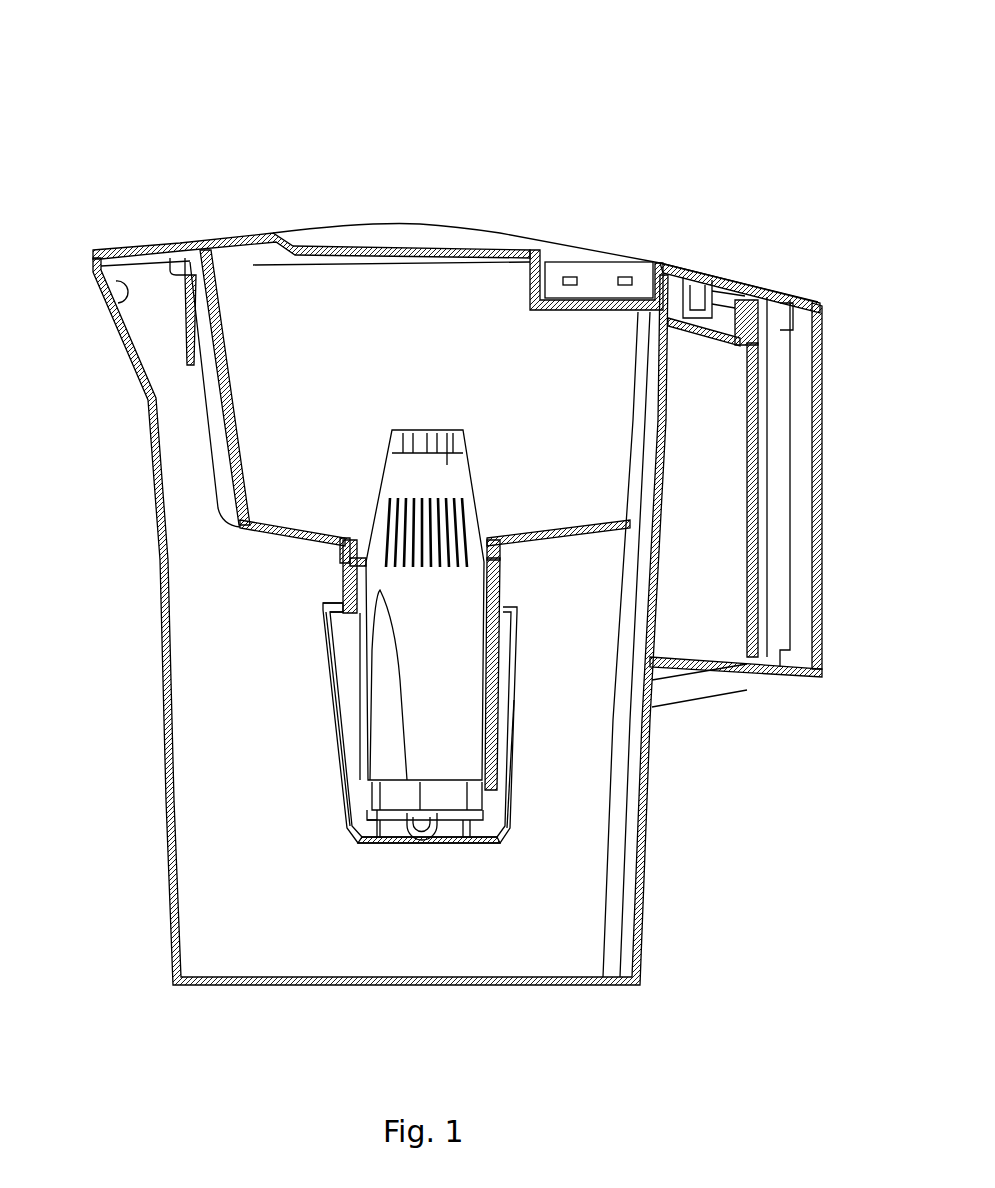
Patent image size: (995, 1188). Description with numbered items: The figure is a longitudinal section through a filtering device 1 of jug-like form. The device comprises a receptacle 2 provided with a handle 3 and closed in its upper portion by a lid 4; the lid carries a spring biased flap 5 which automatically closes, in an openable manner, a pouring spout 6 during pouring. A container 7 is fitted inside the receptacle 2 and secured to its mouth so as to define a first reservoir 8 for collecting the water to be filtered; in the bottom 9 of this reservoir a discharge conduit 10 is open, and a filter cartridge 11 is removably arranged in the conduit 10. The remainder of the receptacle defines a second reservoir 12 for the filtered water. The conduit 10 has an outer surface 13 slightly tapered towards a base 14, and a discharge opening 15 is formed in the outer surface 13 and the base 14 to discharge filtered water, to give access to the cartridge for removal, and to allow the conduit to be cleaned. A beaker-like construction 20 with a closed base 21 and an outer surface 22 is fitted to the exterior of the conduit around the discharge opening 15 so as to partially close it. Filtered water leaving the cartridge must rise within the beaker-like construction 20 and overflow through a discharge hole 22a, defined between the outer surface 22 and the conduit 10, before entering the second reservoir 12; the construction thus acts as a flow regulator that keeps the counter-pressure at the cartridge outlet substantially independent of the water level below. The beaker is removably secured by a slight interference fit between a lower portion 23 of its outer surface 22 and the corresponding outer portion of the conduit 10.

The filtering device 1 is at (637, 141).
The receptacle 2 is at (148, 727).
The handle 3 is at (806, 518).
The lid 4 is at (405, 226).
The spring biased flap 5 is at (135, 250).
The pouring spout 6 is at (125, 298).
The container 7 is at (235, 398).
The first reservoir 8 is at (449, 345).
The bottom 9 is at (290, 525).
The discharge conduit 10 is at (503, 588).
The filter cartridge 11 is at (490, 523).
The second reservoir 12 is at (277, 933).
The outer surface 13 is at (493, 657).
The base 14 is at (478, 843).
The discharge opening 15 is at (368, 806).
The beaker-like construction 20 is at (320, 737).
The closed base 21 is at (372, 847).
The outer surface 22 is at (328, 660).
The discharge hole 22a is at (340, 605).
The lower portion 23 is at (507, 782).